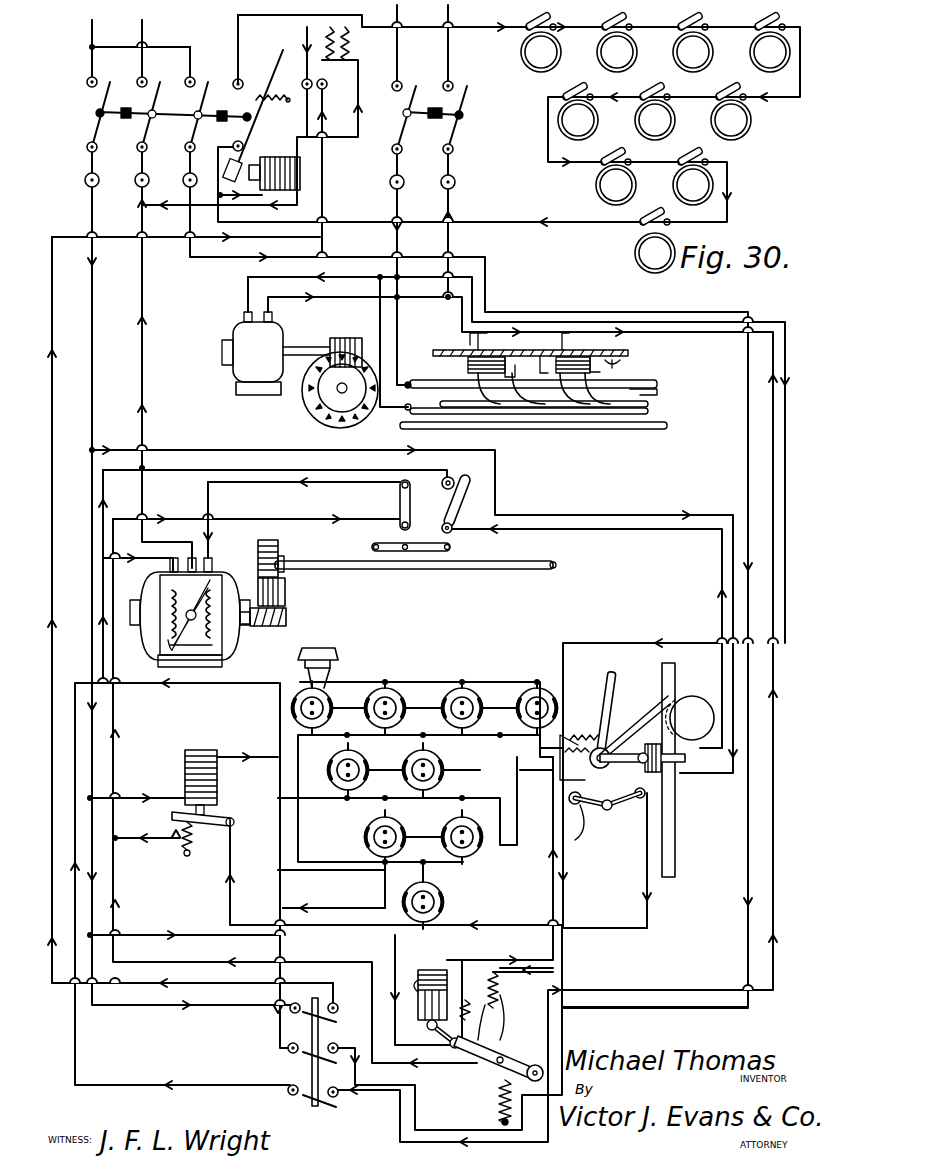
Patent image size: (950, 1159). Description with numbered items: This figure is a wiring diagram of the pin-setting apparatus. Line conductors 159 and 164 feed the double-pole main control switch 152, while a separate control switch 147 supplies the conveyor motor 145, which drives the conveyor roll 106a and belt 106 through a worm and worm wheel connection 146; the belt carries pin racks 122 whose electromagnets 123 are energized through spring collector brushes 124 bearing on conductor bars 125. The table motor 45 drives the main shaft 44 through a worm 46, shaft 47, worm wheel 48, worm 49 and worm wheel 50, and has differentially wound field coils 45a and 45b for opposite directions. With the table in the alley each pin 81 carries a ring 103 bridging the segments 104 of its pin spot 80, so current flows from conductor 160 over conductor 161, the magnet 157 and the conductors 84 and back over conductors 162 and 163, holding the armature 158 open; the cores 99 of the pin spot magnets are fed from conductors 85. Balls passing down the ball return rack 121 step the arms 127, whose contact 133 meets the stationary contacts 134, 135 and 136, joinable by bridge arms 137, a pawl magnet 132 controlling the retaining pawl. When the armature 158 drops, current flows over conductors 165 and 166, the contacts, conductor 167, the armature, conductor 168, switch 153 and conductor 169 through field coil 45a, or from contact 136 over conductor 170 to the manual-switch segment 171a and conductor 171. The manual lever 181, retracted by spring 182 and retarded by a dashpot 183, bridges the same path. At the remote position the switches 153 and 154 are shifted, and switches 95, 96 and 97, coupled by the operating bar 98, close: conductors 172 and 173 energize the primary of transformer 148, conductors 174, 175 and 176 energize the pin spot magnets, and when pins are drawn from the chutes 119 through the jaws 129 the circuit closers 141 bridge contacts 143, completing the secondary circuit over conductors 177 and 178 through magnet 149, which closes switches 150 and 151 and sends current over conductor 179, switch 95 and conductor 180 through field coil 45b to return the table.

The main conductor 159 is at (92, 30).
The line 164 is at (142, 35).
The main control switch 152 is at (100, 112).
The single-pole switch 151 is at (205, 90).
The single-pole switch 150 is at (262, 56).
The transformer 148 is at (347, 44).
The electromagnet 149 is at (272, 160).
The conductor 177 is at (505, 30).
The control switch 147 is at (450, 130).
The circuit closer 141 is at (545, 16).
The contacts 143 is at (625, 20).
The pin chutes 119 is at (600, 68).
The conductor 178 is at (505, 215).
The conductor 173 is at (160, 210).
The conductor 179 is at (228, 258).
The conductor 160 is at (95, 318).
The conductor 163 is at (140, 393).
The conductor 172 is at (52, 422).
The motor 145 is at (240, 330).
The worm and worm wheel connection 146 is at (340, 345).
The roll 106a is at (332, 420).
The racks 122 is at (560, 338).
The electromagnet 123 is at (620, 365).
The conductor bars 125 is at (655, 392).
The spring collector brushes 124 is at (490, 398).
The rod 106 is at (603, 430).
The conductor 174 is at (775, 425).
The conductor 169 is at (212, 498).
The single-pole switch 153 is at (398, 508).
The single-pole switch 154 is at (470, 493).
The main drive shaft 44 is at (406, 568).
The worm wheel 50 is at (278, 548).
The worm 49 is at (258, 566).
The shaft 47 is at (285, 588).
The worm wheel 48 is at (286, 616).
The worm 46 is at (255, 626).
The motor 45 is at (212, 575).
The field coil 45a is at (210, 645).
The field coil 45b is at (170, 648).
The pins 81 is at (332, 650).
The metallic ring 103 is at (300, 680).
The segments 104 is at (322, 695).
The cores 99 is at (388, 688).
The conductors 85 is at (468, 690).
The jaws 129 is at (565, 740).
The conductors 84 is at (340, 748).
The pin spots 80 is at (418, 752).
The conductor 162 is at (250, 690).
The conductor 168 is at (118, 700).
The conductor 175 is at (315, 912).
The electromagnet 157 is at (185, 770).
The armature 158 is at (222, 816).
The conductor 161 is at (120, 800).
The conductor 165 is at (148, 935).
The conductor 180 is at (78, 1030).
The ball return rack 121 is at (675, 836).
The arms 127 is at (618, 676).
The contact 133 is at (664, 706).
The electromagnet 132 is at (665, 766).
The bridge arms 137 is at (630, 772).
The stationary contact 134 is at (650, 800).
The stationary contact 136 is at (586, 824).
The stationary contact 135 is at (605, 830).
The conductor 170 is at (566, 900).
The conductor 176 is at (790, 895).
The conductor 166 is at (545, 948).
The conductor 167 is at (605, 925).
The dashpot 183 is at (422, 970).
The wire 171a is at (308, 978).
The conductor 171 is at (505, 1020).
The lever 181 is at (540, 1062).
The spring 182 is at (500, 1116).
The switch bar 98 is at (312, 1079).
The switch 97 is at (300, 1012).
The switch 96 is at (300, 1052).
The switch 95 is at (300, 1094).